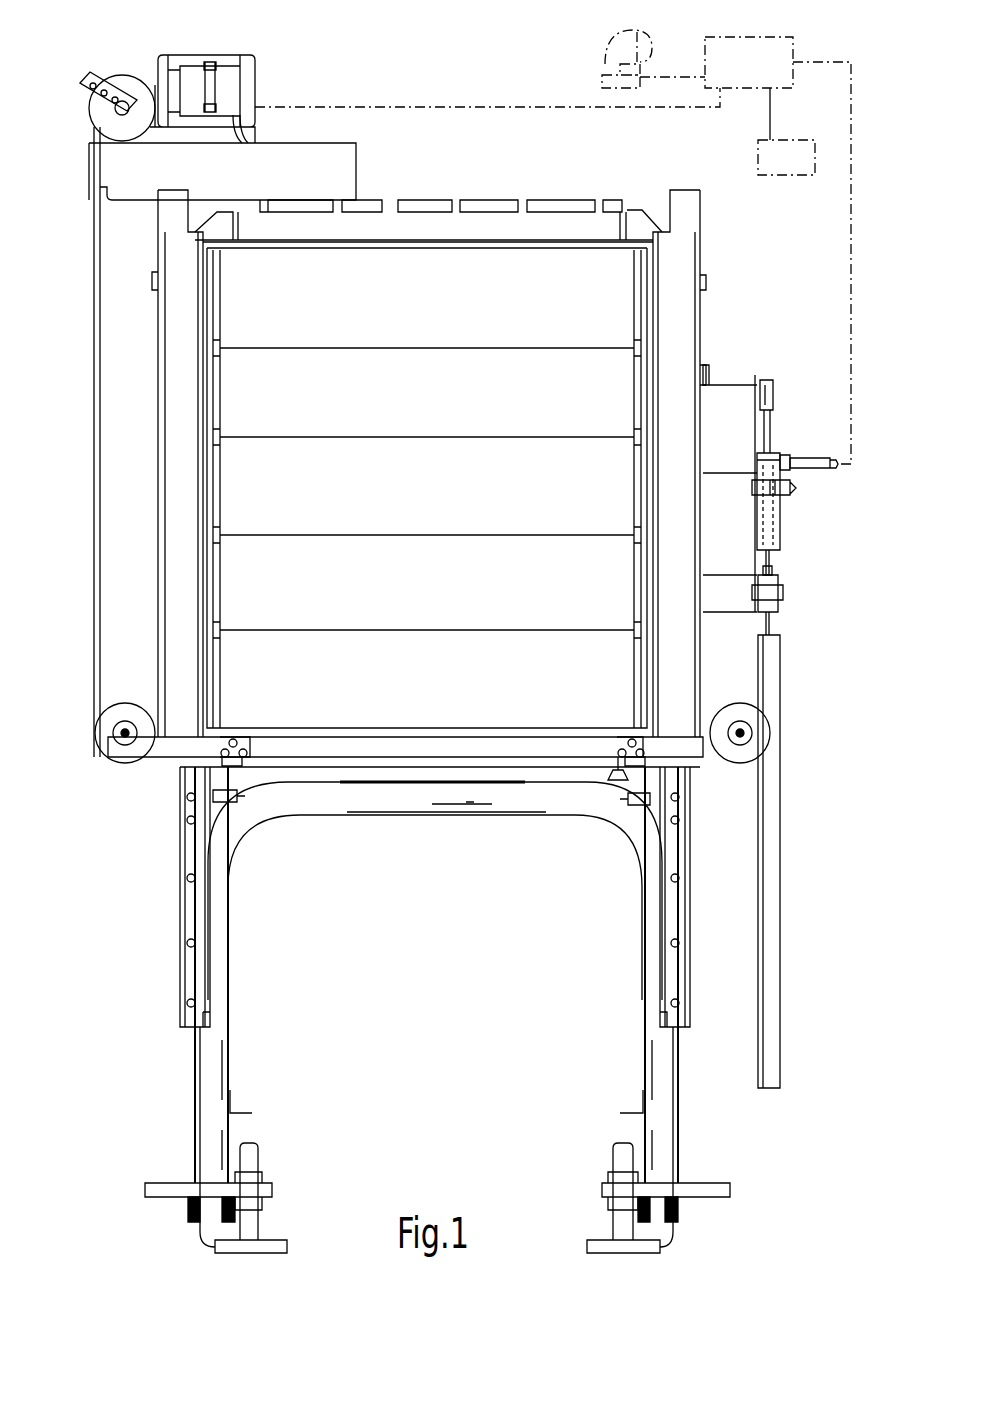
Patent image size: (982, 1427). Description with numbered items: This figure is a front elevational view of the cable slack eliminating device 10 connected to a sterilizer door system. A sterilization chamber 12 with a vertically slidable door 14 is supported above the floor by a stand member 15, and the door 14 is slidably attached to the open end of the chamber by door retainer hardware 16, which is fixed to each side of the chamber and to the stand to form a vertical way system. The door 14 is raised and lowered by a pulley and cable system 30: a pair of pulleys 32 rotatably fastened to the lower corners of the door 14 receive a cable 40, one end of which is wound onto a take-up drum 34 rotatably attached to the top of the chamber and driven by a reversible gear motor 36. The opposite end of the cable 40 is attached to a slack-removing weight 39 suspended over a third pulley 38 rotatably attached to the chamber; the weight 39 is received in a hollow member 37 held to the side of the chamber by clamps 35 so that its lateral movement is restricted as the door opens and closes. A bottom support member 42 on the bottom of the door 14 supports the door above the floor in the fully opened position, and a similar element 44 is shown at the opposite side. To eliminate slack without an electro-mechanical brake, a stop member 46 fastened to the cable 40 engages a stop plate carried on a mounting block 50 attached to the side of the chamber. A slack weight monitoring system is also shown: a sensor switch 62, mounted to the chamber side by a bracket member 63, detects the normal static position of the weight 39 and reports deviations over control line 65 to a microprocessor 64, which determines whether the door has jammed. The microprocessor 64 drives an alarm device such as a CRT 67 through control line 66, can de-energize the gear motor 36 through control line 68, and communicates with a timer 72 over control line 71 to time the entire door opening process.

The cable slack eliminating device 10 is at (792, 590).
The sterilization chamber 12 is at (637, 210).
The door 14 is at (389, 302).
The stand member 15 is at (213, 1062).
The door retainer hardware 16 is at (183, 300).
The pulley and cable system 30 is at (97, 742).
The pulleys 32 is at (135, 712).
The take-up drum 34 is at (128, 92).
The clamps 35 is at (790, 490).
The reversible gear motor 36 is at (238, 110).
The hollow member 37 is at (770, 958).
The third pulley 38 is at (775, 386).
The slack-removing weight 39 is at (775, 805).
The cable 40 is at (96, 250).
The bottom support member 42 is at (618, 781).
The curved tube 44 is at (225, 803).
The stop member 46 is at (763, 573).
The mounting block 50 is at (782, 585).
The sensor switch 62 is at (808, 458).
The bracket member 63 is at (786, 452).
The microprocessor 64 is at (736, 74).
The control line 65 is at (848, 250).
The control line 66 is at (680, 73).
The CRT 67 is at (610, 30).
The control line 68 is at (525, 103).
The control line 71 is at (762, 108).
The timer 72 is at (797, 140).